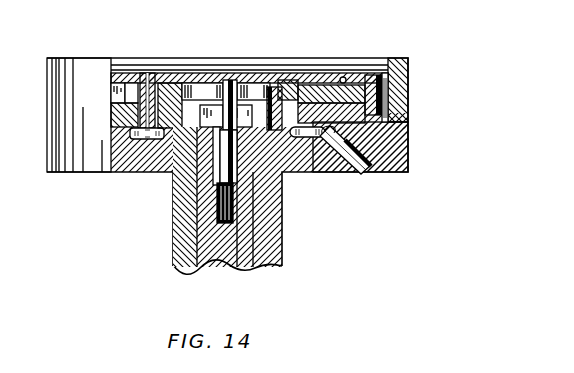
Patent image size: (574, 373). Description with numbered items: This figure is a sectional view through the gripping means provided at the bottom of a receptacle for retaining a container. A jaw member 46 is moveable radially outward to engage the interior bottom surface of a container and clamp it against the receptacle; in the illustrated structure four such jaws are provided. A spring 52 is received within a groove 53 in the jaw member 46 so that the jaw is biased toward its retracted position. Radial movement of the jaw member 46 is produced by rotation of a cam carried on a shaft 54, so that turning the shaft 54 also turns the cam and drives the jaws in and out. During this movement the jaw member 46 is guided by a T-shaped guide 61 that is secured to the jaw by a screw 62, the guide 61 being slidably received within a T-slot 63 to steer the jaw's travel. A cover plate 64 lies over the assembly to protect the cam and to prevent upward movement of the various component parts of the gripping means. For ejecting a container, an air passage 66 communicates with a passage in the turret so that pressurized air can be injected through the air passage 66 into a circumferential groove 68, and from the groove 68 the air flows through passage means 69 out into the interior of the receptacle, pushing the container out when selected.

The jaw member 46 is at (407, 73).
The spring 52 is at (331, 73).
The groove 53 is at (346, 78).
The shaft 54 is at (282, 224).
The T-shaped guide 61 is at (383, 112).
The screw 62 is at (383, 97).
The T-slot 63 is at (312, 140).
The cover plate 64 is at (260, 70).
The air passage 66 is at (362, 168).
The circumferential groove 68 is at (333, 167).
The passage means 69 is at (127, 116).